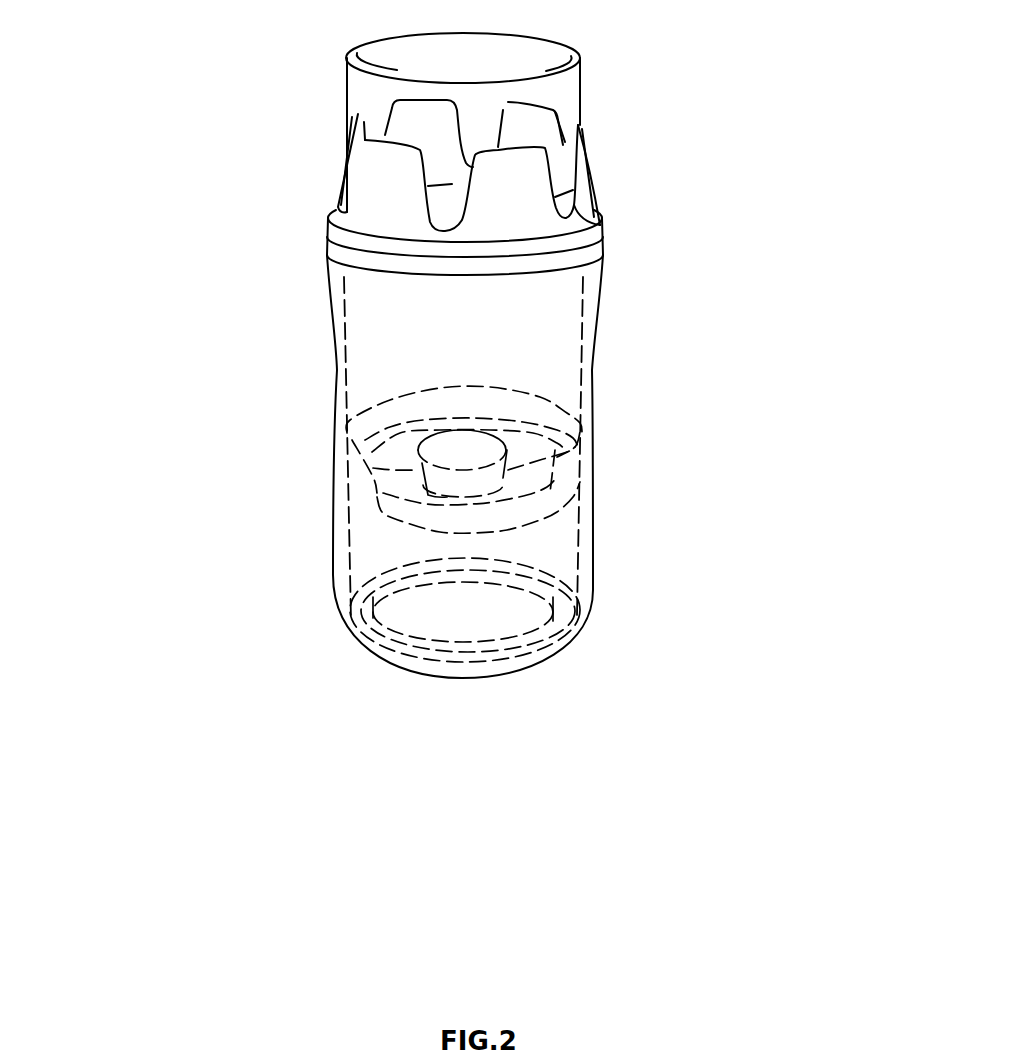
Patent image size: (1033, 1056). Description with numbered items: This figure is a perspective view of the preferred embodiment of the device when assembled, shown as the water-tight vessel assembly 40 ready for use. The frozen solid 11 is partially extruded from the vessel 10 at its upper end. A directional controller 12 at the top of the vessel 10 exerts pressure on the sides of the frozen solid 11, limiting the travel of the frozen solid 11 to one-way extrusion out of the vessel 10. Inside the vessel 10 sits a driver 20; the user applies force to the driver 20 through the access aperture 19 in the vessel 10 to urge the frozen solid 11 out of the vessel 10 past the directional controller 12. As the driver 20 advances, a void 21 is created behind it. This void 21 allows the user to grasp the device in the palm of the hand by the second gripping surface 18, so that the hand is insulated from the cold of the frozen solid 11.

The vessel 10 is at (593, 303).
The frozen solid 11 is at (580, 63).
The directional controller 12 is at (587, 155).
The second gripping surface 18 is at (530, 670).
The access aperture 19 is at (548, 623).
The driver 20 is at (543, 515).
The void 21 is at (550, 560).
The water-tight vessel assembly 40 is at (272, 52).